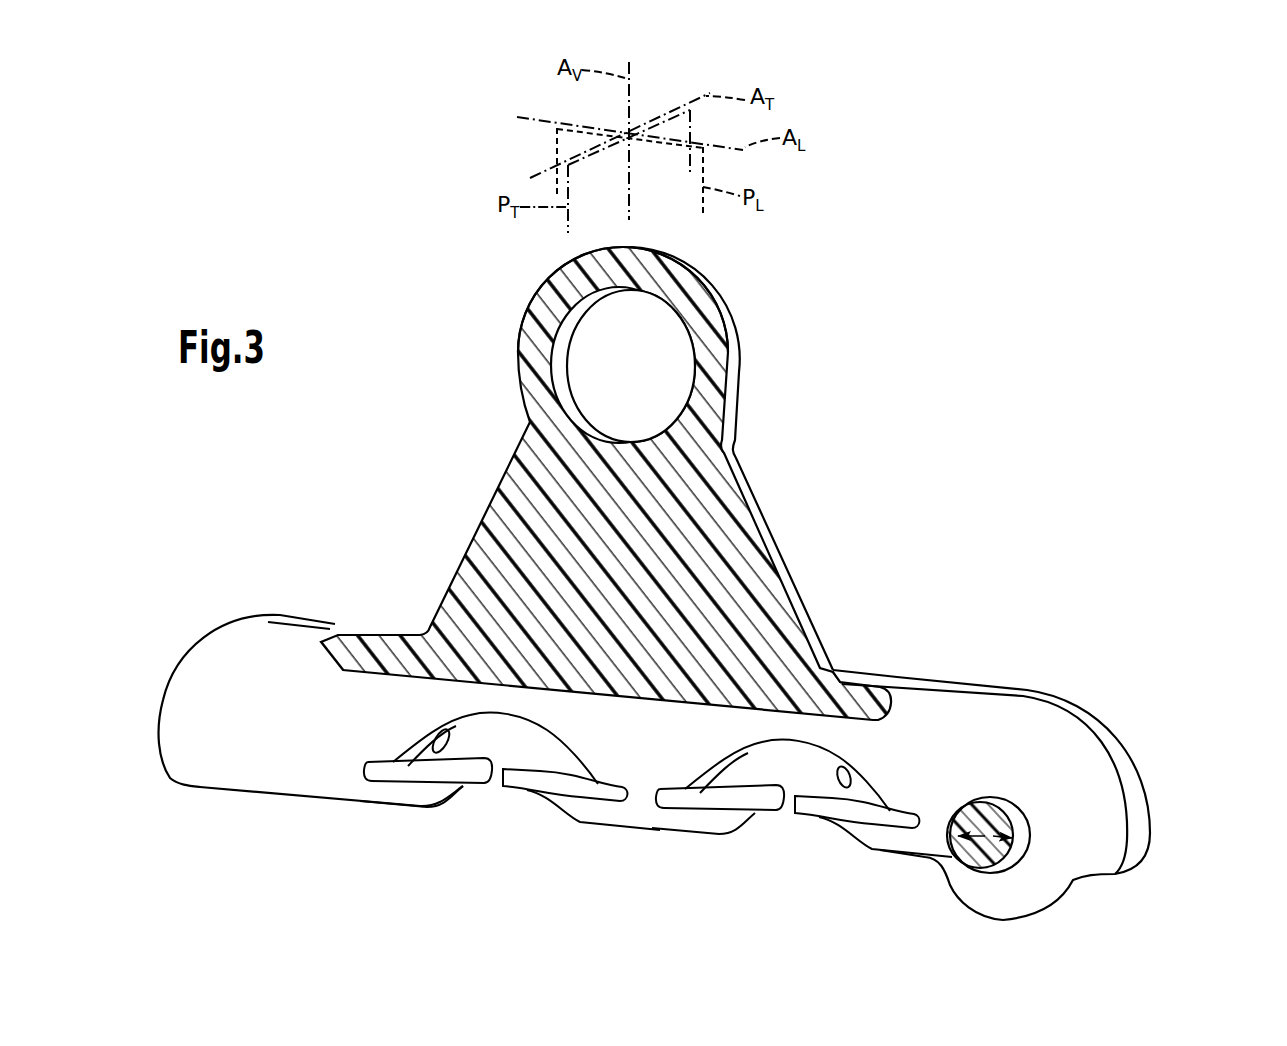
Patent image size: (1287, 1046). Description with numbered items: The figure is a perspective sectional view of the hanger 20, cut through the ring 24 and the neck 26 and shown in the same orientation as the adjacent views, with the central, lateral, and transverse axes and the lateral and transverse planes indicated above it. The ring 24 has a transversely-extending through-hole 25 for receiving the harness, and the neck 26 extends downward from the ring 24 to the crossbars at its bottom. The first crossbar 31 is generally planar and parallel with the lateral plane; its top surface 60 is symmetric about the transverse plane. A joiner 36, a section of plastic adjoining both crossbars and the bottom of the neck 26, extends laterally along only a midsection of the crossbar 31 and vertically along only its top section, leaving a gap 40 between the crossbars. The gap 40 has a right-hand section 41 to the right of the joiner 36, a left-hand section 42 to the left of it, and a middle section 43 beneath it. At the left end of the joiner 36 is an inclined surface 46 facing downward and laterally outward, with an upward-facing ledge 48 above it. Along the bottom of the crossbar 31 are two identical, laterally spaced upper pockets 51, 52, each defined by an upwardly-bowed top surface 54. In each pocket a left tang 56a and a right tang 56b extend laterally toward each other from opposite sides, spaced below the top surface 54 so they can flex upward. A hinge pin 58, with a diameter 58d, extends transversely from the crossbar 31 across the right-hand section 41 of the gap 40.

The hanger 20 is at (852, 412).
The ring 24 is at (740, 380).
The through-hole 25 is at (645, 371).
The neck 26 is at (770, 552).
The first crossbar 31 is at (1110, 752).
The joiner 36 is at (395, 648).
The gap 40 is at (711, 724).
The right-hand section 41 is at (1028, 704).
The left-hand section 42 is at (233, 630).
The middle section 43 is at (590, 736).
The inclined surface 46 is at (323, 657).
The ledge 48 is at (323, 632).
The upper pocket 51 is at (483, 720).
The upper pocket 52 is at (795, 758).
The top surface 54 is at (422, 752).
The left tang 56a is at (467, 775).
The right tang 56b is at (523, 780).
The hinge pin 58 is at (1058, 861).
The diameter 58d is at (977, 853).
The top surface 60 is at (938, 684).